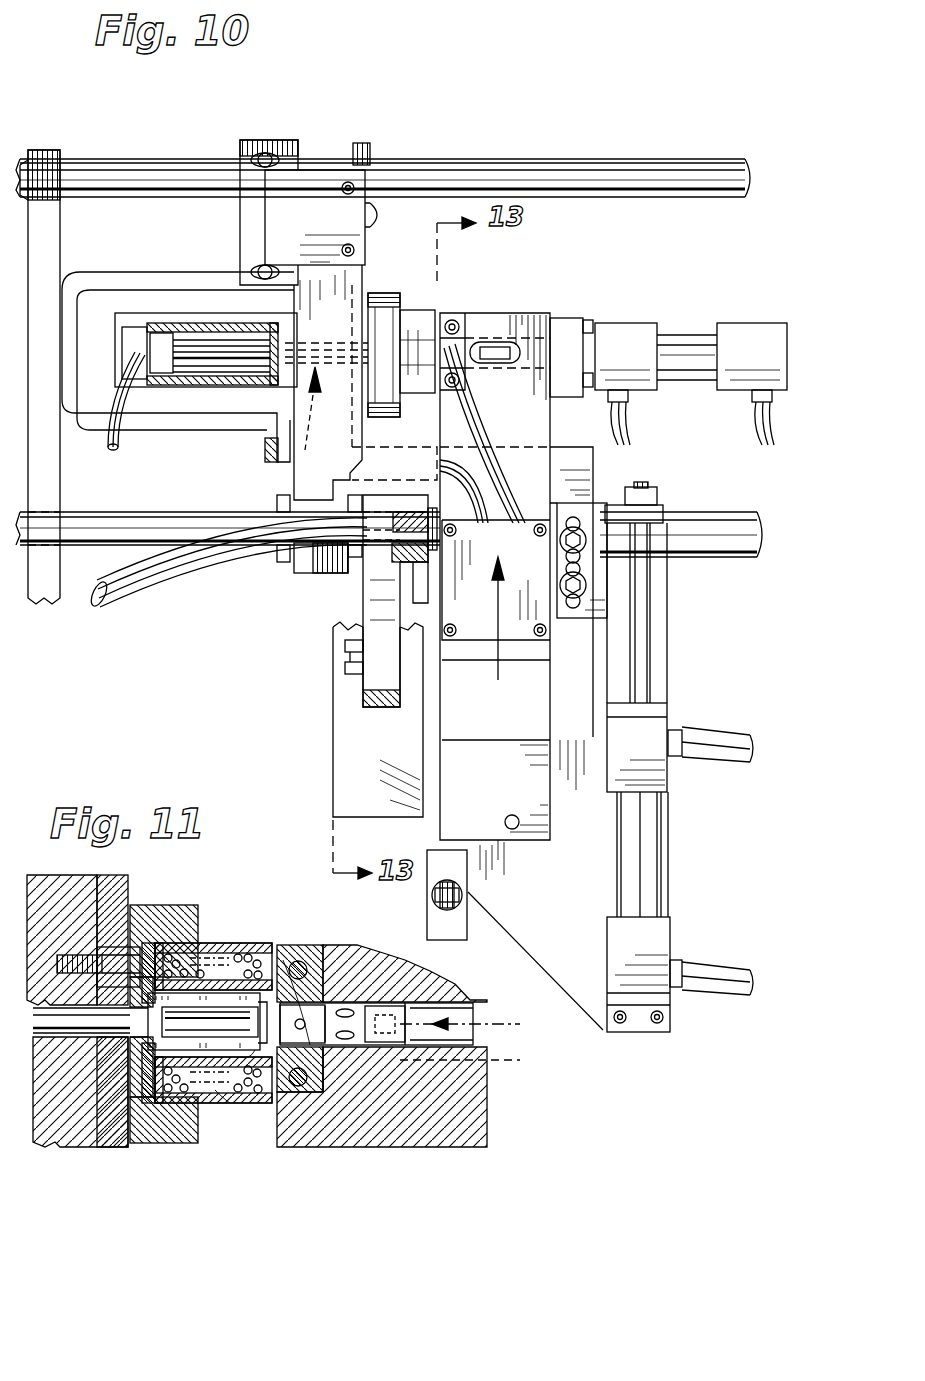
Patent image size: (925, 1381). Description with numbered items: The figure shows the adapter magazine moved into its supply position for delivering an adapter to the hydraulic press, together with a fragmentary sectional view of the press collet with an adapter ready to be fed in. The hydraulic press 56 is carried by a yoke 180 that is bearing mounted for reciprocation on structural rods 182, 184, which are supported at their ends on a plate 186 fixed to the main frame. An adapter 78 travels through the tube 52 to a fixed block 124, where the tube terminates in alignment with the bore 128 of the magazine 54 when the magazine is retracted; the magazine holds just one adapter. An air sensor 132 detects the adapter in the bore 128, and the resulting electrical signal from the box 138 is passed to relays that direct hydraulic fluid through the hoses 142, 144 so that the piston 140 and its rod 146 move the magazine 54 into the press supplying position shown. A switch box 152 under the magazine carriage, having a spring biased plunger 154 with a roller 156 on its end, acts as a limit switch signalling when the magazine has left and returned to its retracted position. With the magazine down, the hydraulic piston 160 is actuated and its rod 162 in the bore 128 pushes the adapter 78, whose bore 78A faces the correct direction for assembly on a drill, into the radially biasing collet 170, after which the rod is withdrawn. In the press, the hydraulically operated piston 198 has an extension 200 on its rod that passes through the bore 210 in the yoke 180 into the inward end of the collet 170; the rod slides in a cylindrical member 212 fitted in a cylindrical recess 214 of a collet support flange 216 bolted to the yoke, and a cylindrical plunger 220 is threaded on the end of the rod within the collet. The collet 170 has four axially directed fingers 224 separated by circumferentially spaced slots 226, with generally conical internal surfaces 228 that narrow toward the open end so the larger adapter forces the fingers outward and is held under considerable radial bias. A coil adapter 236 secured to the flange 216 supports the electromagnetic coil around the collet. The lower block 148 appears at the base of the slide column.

In FIG. 10, the structural rod 182 is at (150, 160).
In FIG. 10, the plate 186 is at (54, 600).
In FIG. 10, the yoke 180 is at (340, 310).
In FIG. 10, the hydraulically operated piston 198 is at (165, 385).
In FIG. 10, the collet 170 is at (326, 402).
In FIG. 11, the collet 170 is at (192, 1007).
In FIG. 10, the collet support flange 216 is at (362, 420).
In FIG. 11, the collet support flange 216 is at (110, 945).
In FIG. 10, the structural rod 184 is at (130, 515).
In FIG. 10, the tube 52 is at (178, 578).
In FIG. 10, the fixed block 124 is at (382, 548).
In FIG. 10, the box 138 is at (545, 560).
In FIG. 10, the lower block 148 is at (492, 830).
In FIG. 10, the piston rod 146 is at (645, 488).
In FIG. 10, the piston 140 is at (650, 850).
In FIG. 10, the hose 144 is at (718, 740).
In FIG. 10, the hose 142 is at (718, 968).
In FIG. 10, the switch box 152 is at (455, 940).
In FIG. 10, the spring biased plunger 154 is at (435, 900).
In FIG. 10, the roller 156 is at (438, 890).
In FIG. 10, the hydraulic press 56 is at (378, 292).
In FIG. 11, the hydraulic press 56 is at (123, 886).
In FIG. 10, the air sensor 132 is at (454, 313).
In FIG. 11, the air sensor 132 is at (317, 945).
In FIG. 10, the adapter 78 is at (500, 343).
In FIG. 11, the adapter 78 is at (310, 998).
In FIG. 10, the magazine 54 is at (545, 312).
In FIG. 11, the magazine 54 is at (487, 1102).
In FIG. 10, the hydraulic piston 160 is at (690, 340).
In FIG. 10, the rod 162 is at (520, 340).
In FIG. 11, the rod 162 is at (475, 1012).
In FIG. 11, the extension 200 is at (52, 1015).
In FIG. 11, the bore 210 is at (62, 1035).
In FIG. 11, the cylindrical member 212 is at (110, 1100).
In FIG. 11, the cylindrical recess 214 is at (130, 925).
In FIG. 11, the cylindrical plunger 220 is at (160, 1125).
In FIG. 11, the coil adapter 236 is at (200, 943).
In FIG. 11, the fingers 224 is at (255, 943).
In FIG. 11, the internal surfaces 228 is at (213, 960).
In FIG. 11, the slots 226 is at (228, 1103).
In FIG. 11, the bore 128 is at (340, 1080).
In FIG. 11, the bore 78A is at (479, 1060).